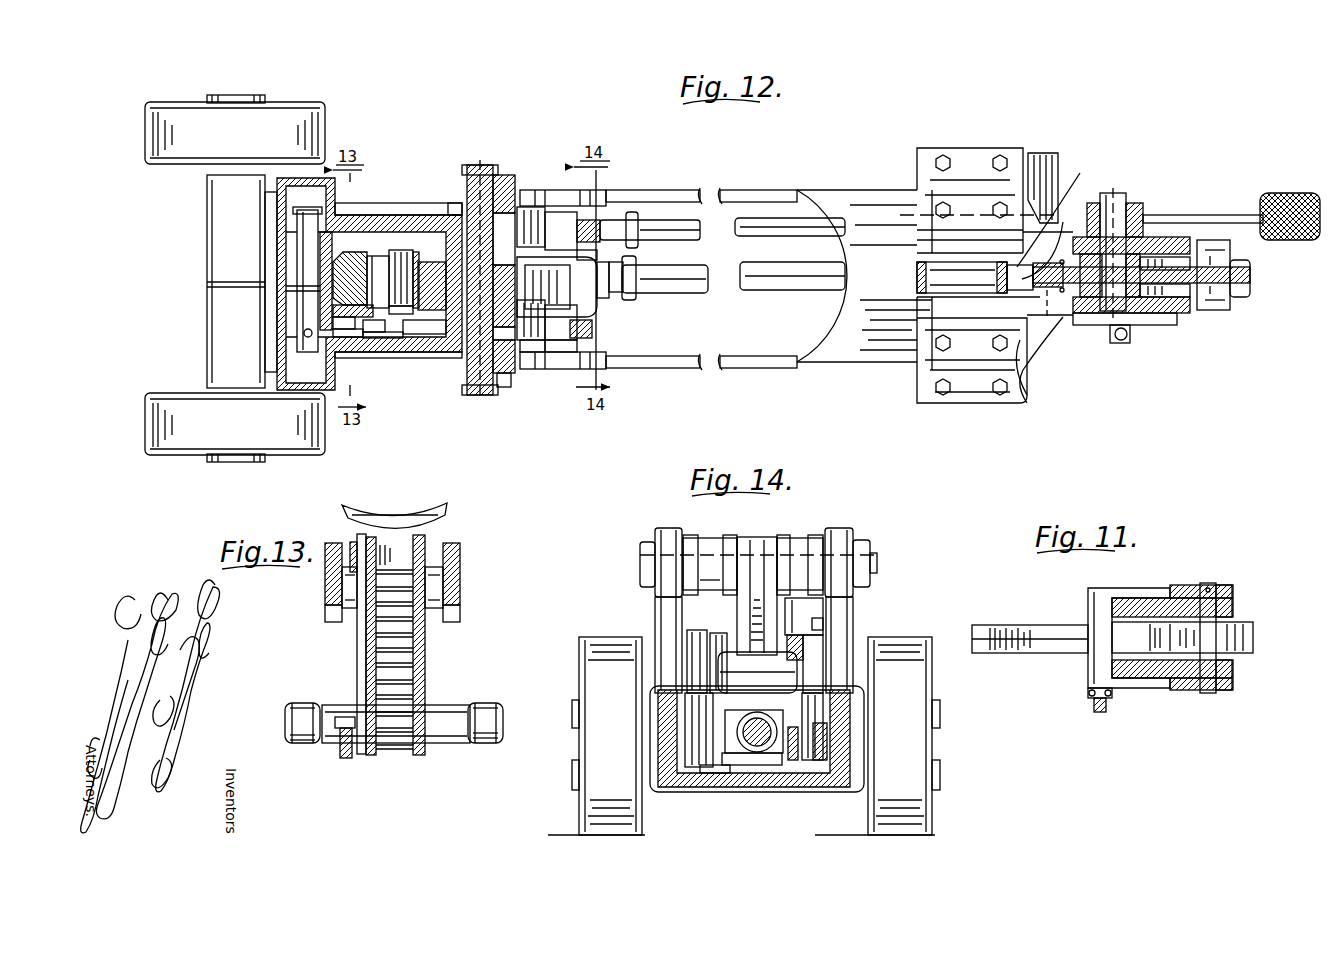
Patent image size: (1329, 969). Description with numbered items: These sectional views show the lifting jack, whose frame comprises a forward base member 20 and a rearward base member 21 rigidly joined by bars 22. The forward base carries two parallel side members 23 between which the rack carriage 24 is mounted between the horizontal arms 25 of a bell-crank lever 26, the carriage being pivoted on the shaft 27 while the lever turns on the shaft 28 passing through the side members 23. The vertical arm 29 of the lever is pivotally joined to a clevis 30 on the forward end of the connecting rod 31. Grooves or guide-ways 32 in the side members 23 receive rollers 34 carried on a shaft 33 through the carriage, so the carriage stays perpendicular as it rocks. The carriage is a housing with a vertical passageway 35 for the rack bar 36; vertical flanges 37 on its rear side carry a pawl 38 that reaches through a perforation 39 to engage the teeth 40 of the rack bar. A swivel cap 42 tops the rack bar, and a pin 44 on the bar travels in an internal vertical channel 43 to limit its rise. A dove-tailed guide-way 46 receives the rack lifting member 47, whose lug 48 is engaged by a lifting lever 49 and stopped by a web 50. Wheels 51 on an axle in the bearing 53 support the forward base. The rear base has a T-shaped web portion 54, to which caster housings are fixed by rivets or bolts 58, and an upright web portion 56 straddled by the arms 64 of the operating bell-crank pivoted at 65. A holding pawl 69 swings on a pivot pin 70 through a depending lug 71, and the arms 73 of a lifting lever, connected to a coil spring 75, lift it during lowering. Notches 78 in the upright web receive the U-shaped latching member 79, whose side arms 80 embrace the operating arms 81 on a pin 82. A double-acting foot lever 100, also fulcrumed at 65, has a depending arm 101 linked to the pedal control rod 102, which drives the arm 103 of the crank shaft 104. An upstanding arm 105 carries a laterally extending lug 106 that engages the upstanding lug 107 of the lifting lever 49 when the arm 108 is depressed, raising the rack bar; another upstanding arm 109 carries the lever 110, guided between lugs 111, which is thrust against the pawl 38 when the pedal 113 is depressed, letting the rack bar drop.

In FIG. 12, the forward base member 20 is at (232, 310).
In FIG. 14, the forward base member 20 is at (695, 793).
In FIG. 12, the rearward base member 21 is at (1228, 312).
In FIG. 12, the bars 22 is at (704, 192).
In FIG. 12, the side members 23 is at (372, 284).
In FIG. 14, the side members 23 is at (670, 538).
In FIG. 12, the rack carriage 24 is at (386, 300).
In FIG. 13, the rack carriage 24 is at (425, 648).
In FIG. 14, the rack carriage 24 is at (735, 765).
In FIG. 12, the horizontal arms 25 is at (420, 284).
In FIG. 13, the horizontal arms 25 is at (460, 570).
In FIG. 12, the bell-crank lever 26 is at (512, 208).
In FIG. 14, the bell-crank lever 26 is at (714, 548).
In FIG. 12, the shaft 27 is at (300, 300).
In FIG. 12, the shaft 28 is at (485, 185).
In FIG. 12, the vertical arm 29 is at (612, 300).
In FIG. 14, the vertical arm 29 is at (757, 595).
In FIG. 12, the clevis 30 is at (640, 298).
In FIG. 14, the clevis 30 is at (757, 755).
In FIG. 12, the connecting rod 31 is at (745, 295).
In FIG. 14, the connecting rod 31 is at (754, 750).
In FIG. 12, the guide-ways 32 is at (280, 194).
In FIG. 13, the shaft 33 is at (505, 722).
In FIG. 13, the rollers 34 is at (300, 746).
In FIG. 12, the vertical passageway 35 is at (418, 265).
In FIG. 12, the rack bar 36 is at (312, 262).
In FIG. 12, the vertical flanges 37 is at (428, 270).
In FIG. 12, the pawl 38 is at (370, 333).
In FIG. 12, the perforation 39 is at (378, 340).
In FIG. 12, the teeth 40 is at (335, 276).
In FIG. 13, the teeth 40 is at (378, 630).
In FIG. 13, the swivel cap 42 is at (448, 512).
In FIG. 12, the internal vertical channel 43 is at (330, 294).
In FIG. 12, the pin 44 is at (326, 286).
In FIG. 12, the dove-tailed guide-way 46 is at (335, 312).
In FIG. 13, the dove-tailed guide-way 46 is at (377, 683).
In FIG. 12, the rack lifting member 47 is at (347, 337).
In FIG. 13, the rack lifting member 47 is at (368, 690).
In FIG. 12, the lug 48 is at (335, 322).
In FIG. 13, the lug 48 is at (337, 742).
In FIG. 12, the lifting lever 49 is at (430, 348).
In FIG. 13, the lifting lever 49 is at (346, 758).
In FIG. 14, the lifting lever 49 is at (710, 773).
In FIG. 13, the web 50 is at (358, 540).
In FIG. 12, the wheels 51 is at (292, 115).
In FIG. 14, the wheels 51 is at (585, 808).
In FIG. 12, the bearing 53 is at (207, 198).
In FIG. 12, the T-shaped web portion 54 is at (1000, 160).
In FIG. 12, the upright web portion 56 is at (945, 268).
In FIG. 11, the upright web portion 56 is at (1015, 652).
In FIG. 12, the rivets or bolts 58 is at (946, 158).
In FIG. 12, the arms 64 is at (1192, 240).
In FIG. 12, the pivot 65 is at (1122, 198).
In FIG. 12, the holding pawl 69 is at (1055, 212).
In FIG. 12, the pivot pin 70 is at (1050, 300).
In FIG. 12, the depending lug 71 is at (1030, 370).
In FIG. 12, the arms 73 is at (1080, 324).
In FIG. 12, the coil spring 75 is at (1118, 340).
In FIG. 11, the coil spring 75 is at (1093, 700).
In FIG. 11, the notches 78 is at (1252, 638).
In FIG. 11, the latching member 79 is at (1095, 618).
In FIG. 11, the side arms 80 is at (1182, 588).
In FIG. 11, the operating arms 81 is at (1234, 605).
In FIG. 11, the pin 82 is at (1208, 696).
In FIG. 12, the foot lever 100 is at (1140, 215).
In FIG. 12, the depending arm 101 is at (1185, 214).
In FIG. 12, the pedal control rod 102 is at (765, 222).
In FIG. 12, the arm 103 is at (600, 262).
In FIG. 14, the arm 103 is at (815, 715).
In FIG. 12, the crank shaft 104 is at (560, 240).
In FIG. 14, the crank shaft 104 is at (715, 676).
In FIG. 12, the upstanding arm 105 is at (565, 344).
In FIG. 14, the upstanding arm 105 is at (720, 630).
In FIG. 12, the laterally extending lug 106 is at (540, 350).
In FIG. 14, the laterally extending lug 106 is at (688, 650).
In FIG. 12, the upstanding lug 107 is at (590, 330).
In FIG. 14, the upstanding lug 107 is at (712, 658).
In FIG. 12, the arm 108 is at (1285, 194).
In FIG. 12, the upstanding arm 109 is at (597, 234).
In FIG. 14, the upstanding arm 109 is at (810, 665).
In FIG. 12, the lever 110 is at (458, 210).
In FIG. 14, the lever 110 is at (812, 612).
In FIG. 14, the lugs 111 is at (823, 625).
In FIG. 12, the pedal 113 is at (1050, 156).